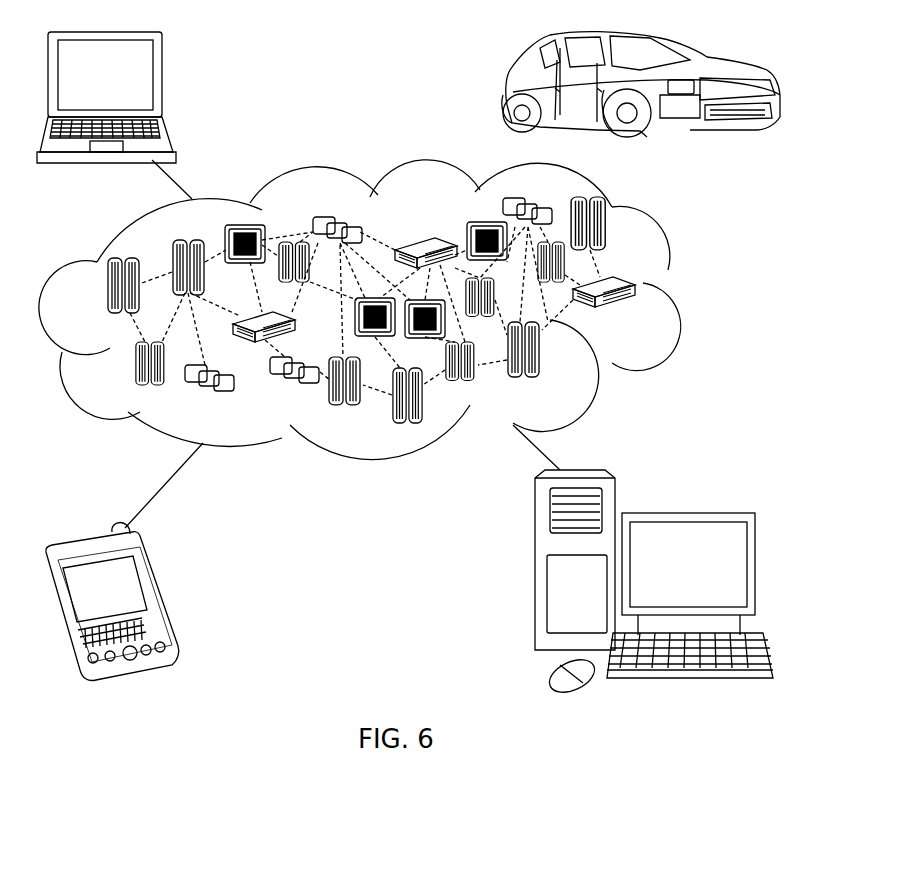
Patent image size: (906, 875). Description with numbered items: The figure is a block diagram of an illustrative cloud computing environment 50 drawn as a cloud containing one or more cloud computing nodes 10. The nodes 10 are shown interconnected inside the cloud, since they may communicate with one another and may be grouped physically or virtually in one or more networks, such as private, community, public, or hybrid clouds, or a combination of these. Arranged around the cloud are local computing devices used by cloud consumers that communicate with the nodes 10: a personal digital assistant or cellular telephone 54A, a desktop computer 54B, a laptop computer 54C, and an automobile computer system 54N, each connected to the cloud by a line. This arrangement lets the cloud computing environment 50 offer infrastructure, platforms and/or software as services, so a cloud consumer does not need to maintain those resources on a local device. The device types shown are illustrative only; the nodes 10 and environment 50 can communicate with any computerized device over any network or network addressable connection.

The cloud computing nodes 10 is at (637, 311).
The cloud computing environment 50 is at (683, 290).
The personal digital assistant (PDA) or cellular telephone 54A is at (158, 592).
The desktop computer 54B is at (685, 512).
The laptop computer 54C is at (163, 82).
The automobile computer system 54N is at (508, 90).